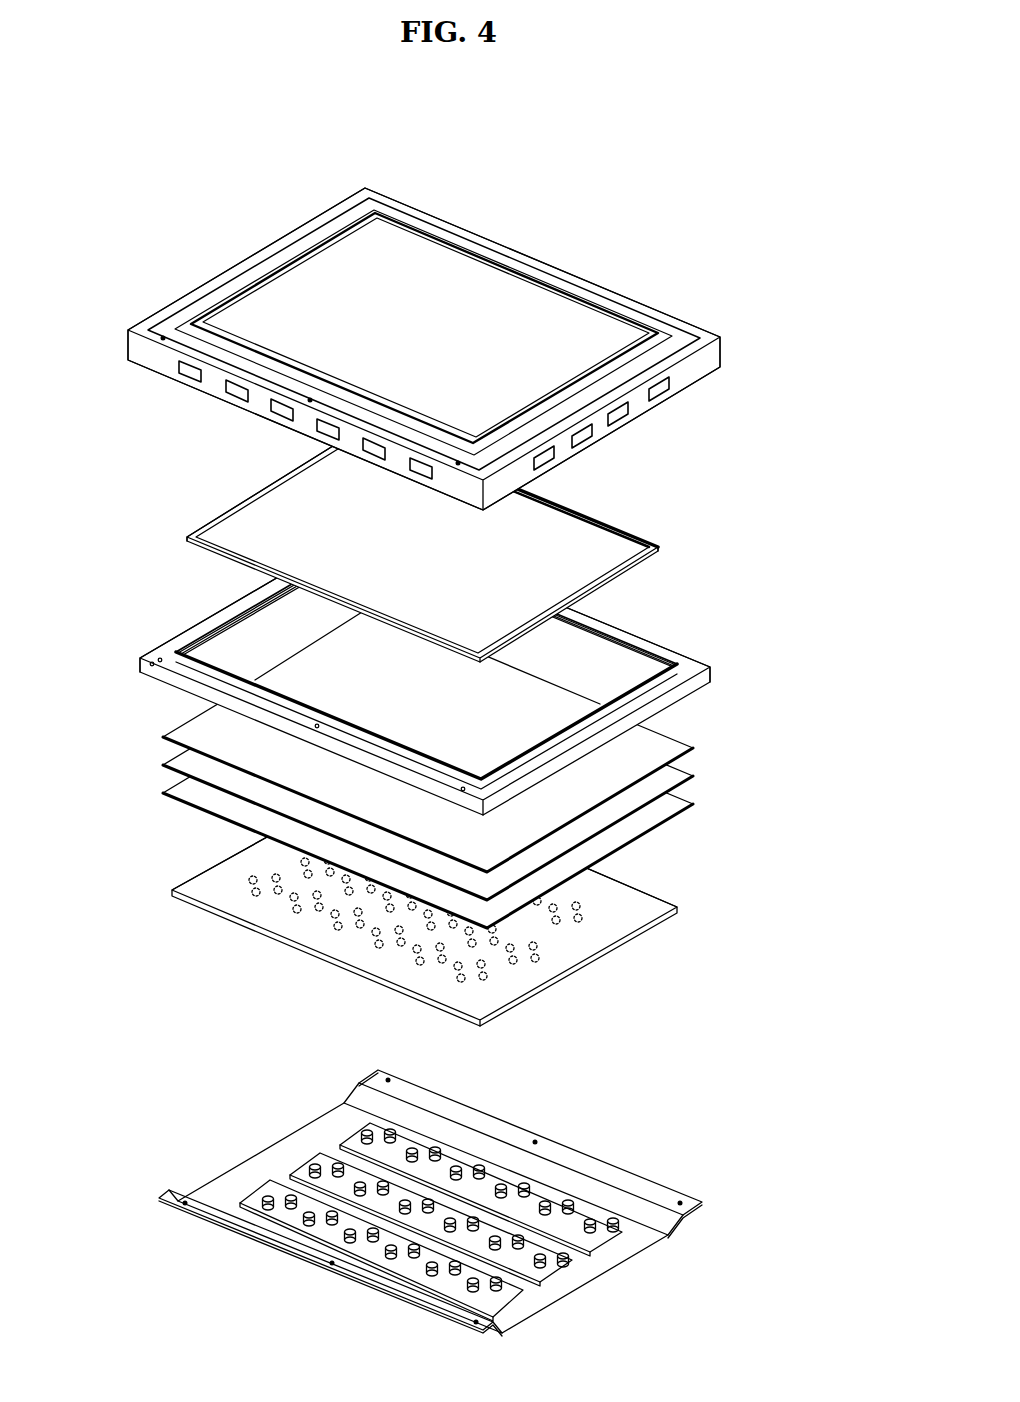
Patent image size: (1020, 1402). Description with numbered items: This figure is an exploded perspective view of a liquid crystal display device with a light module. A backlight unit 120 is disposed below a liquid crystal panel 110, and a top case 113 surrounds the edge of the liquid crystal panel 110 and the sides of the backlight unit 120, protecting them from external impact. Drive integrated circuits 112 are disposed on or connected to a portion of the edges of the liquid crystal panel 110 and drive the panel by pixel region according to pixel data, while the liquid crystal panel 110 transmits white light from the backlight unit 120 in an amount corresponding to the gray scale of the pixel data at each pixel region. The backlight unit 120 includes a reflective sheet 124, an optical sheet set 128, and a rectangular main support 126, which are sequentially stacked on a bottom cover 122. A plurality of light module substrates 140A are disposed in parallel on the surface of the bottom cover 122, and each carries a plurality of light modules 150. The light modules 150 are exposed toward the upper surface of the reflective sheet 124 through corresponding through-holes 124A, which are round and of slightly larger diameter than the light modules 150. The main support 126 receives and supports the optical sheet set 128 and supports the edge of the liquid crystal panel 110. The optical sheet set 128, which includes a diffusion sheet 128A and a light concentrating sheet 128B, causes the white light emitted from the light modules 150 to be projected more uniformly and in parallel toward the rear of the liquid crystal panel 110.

The liquid crystal panel 110 is at (451, 544).
The drive integrated circuits 112 is at (548, 500).
The top case 113 is at (720, 358).
The backlight unit 120 is at (455, 930).
The bottom cover 122 is at (469, 1203).
The reflective sheet 124 is at (456, 904).
The through-hole 124A is at (532, 952).
The main support 126 is at (470, 670).
The optical sheet set 128 is at (402, 770).
The diffusion sheet 128A is at (163, 793).
The light concentrating sheet 128B is at (160, 762).
The LED printed circuit boards 140A is at (494, 1206).
The light module 150 is at (590, 1213).